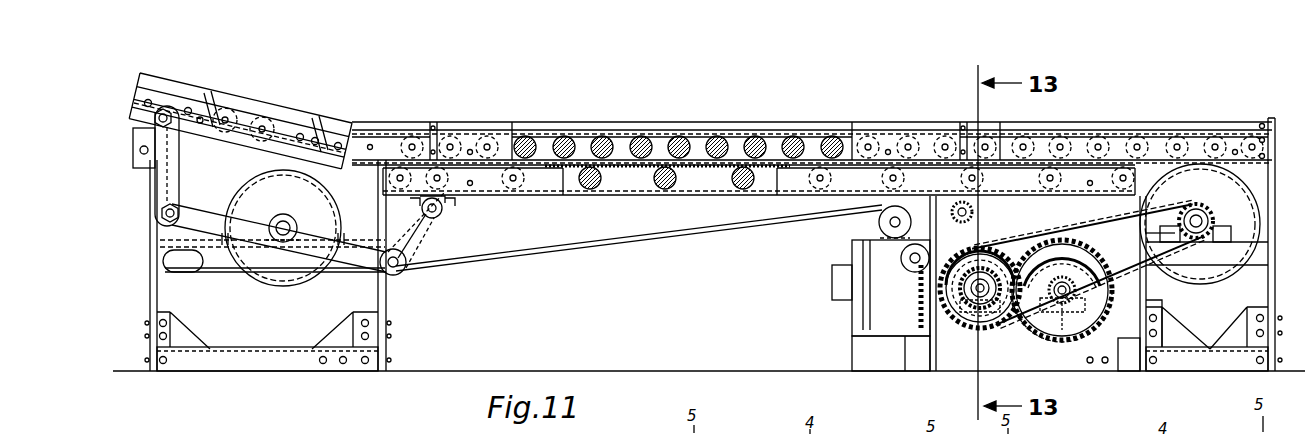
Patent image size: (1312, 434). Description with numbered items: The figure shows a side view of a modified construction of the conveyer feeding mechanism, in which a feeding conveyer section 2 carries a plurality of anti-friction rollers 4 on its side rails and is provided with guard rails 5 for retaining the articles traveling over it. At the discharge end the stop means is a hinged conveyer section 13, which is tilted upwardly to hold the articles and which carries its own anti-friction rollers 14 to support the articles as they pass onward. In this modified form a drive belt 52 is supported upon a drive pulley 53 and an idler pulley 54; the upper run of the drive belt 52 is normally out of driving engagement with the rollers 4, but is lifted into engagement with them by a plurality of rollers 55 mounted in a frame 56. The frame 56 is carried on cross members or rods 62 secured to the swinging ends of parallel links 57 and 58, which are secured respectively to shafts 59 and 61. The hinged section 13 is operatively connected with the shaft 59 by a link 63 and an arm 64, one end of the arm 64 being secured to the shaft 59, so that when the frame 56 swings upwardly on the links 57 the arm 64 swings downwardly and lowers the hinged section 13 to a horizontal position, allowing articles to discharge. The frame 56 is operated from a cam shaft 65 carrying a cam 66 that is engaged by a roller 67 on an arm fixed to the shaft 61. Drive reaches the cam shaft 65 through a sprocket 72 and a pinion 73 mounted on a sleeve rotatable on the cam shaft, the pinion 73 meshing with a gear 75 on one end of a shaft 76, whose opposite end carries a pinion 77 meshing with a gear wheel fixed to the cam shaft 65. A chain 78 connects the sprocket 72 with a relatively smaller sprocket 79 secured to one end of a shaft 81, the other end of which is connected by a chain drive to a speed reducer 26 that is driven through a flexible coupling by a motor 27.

The feeding conveyer section 2 is at (757, 120).
The anti-friction rollers 4 is at (642, 130).
The guard rails 5 is at (300, 112).
The hinged conveyer section 13 is at (258, 88).
The anti-friction rollers 14 is at (152, 95).
The speed reducer 26 is at (1113, 205).
The motor 27 is at (880, 268).
The drive belt 52 is at (772, 152).
The drive pulley 53 is at (1215, 178).
The idler pulley 54 is at (280, 280).
The rollers 55 is at (585, 188).
The frame 56 is at (646, 190).
The parallel link 57 is at (427, 233).
The parallel link 58 is at (1032, 236).
The shaft 59 is at (398, 273).
The shaft 61 is at (912, 262).
The cross members or rods 62 is at (440, 212).
The link 63 is at (165, 212).
The arm 64 is at (212, 264).
The cam shaft 65 is at (978, 300).
The cam 66 is at (990, 338).
The roller 67 is at (1025, 338).
The sprocket 72 is at (960, 320).
The pinion 73 is at (981, 332).
The gear 75 is at (1077, 302).
The shaft 76 is at (1062, 300).
The pinion 77 is at (1125, 344).
The chain 78 is at (1160, 300).
The sprocket 79 is at (1212, 238).
The shaft 81 is at (1196, 240).